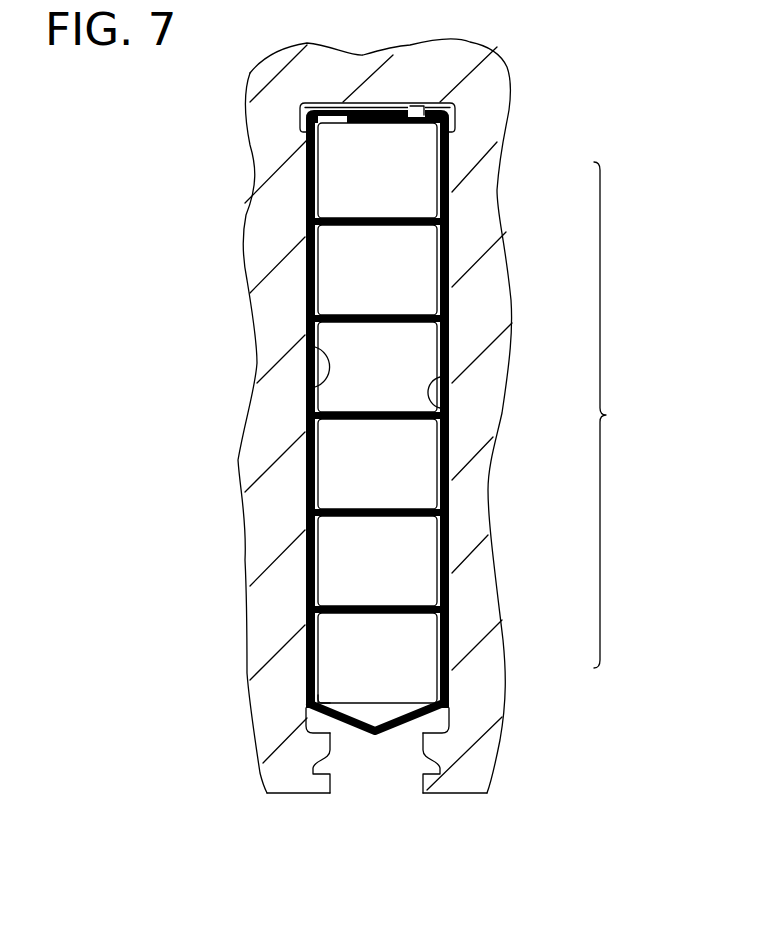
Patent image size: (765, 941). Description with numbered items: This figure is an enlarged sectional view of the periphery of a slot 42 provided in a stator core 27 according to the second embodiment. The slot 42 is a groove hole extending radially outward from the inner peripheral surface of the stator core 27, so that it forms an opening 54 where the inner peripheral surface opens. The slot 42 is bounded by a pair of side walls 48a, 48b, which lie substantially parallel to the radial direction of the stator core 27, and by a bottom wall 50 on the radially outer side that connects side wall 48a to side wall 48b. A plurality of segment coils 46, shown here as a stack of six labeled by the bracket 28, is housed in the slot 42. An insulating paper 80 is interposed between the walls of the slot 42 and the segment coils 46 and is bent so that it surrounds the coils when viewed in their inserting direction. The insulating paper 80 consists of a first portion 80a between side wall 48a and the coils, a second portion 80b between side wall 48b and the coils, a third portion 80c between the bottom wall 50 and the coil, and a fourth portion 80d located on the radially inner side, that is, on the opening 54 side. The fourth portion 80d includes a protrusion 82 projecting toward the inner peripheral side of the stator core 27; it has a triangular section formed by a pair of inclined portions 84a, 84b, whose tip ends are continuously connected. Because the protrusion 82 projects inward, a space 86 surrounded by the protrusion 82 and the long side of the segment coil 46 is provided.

The stator core 27 is at (288, 193).
The battery cell stack 28 is at (622, 415).
The slot 42 is at (302, 433).
The segment coils 46 is at (415, 181).
The side wall 48a is at (315, 348).
The side wall 48b is at (445, 410).
The bottom wall 50 is at (424, 108).
The opening 54 is at (388, 781).
The insulating paper 80 is at (379, 427).
The first portion 80a is at (304, 530).
The second portion 80b is at (450, 500).
The third portion 80c is at (342, 108).
The fourth portion 80d is at (379, 750).
The protrusion 82 is at (376, 744).
The inclined portion 84a is at (330, 747).
The inclined portion 84b is at (432, 747).
The space 86 is at (368, 706).